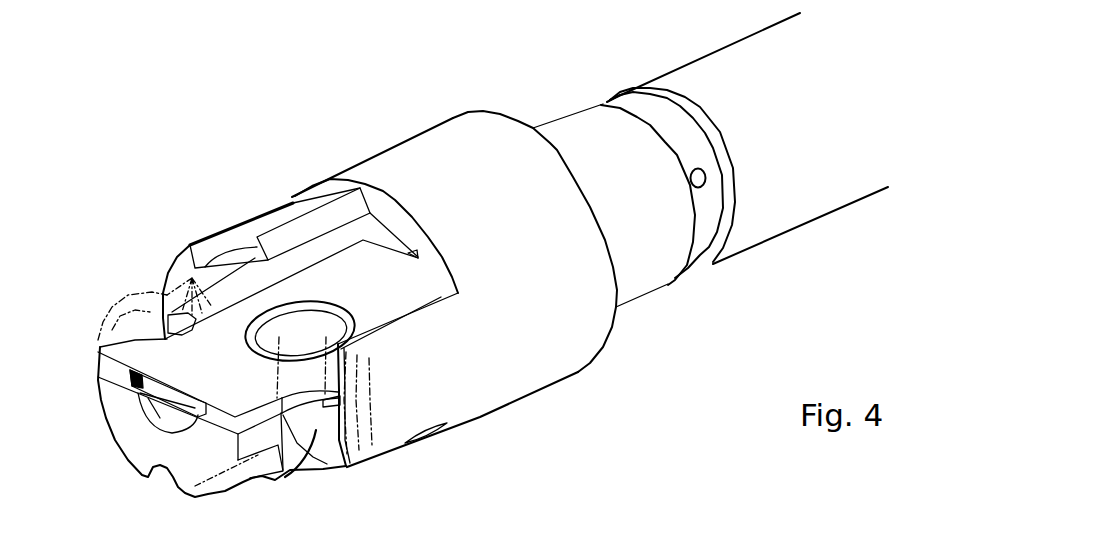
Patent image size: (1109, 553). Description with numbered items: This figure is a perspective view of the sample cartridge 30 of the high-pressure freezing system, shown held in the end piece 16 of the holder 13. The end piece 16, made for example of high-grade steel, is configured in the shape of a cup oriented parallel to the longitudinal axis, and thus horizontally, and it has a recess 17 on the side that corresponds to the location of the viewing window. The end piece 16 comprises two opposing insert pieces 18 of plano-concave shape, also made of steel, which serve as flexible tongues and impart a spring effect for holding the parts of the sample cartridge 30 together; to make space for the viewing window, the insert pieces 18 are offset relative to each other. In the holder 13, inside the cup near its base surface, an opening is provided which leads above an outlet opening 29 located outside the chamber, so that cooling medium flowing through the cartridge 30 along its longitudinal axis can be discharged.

The holder 13 is at (768, 337).
The end piece 16 is at (513, 380).
The recess 17 is at (377, 204).
The insert pieces 18 is at (262, 218).
The outlet opening 29 is at (701, 170).
The sample cartridge 30 is at (92, 277).